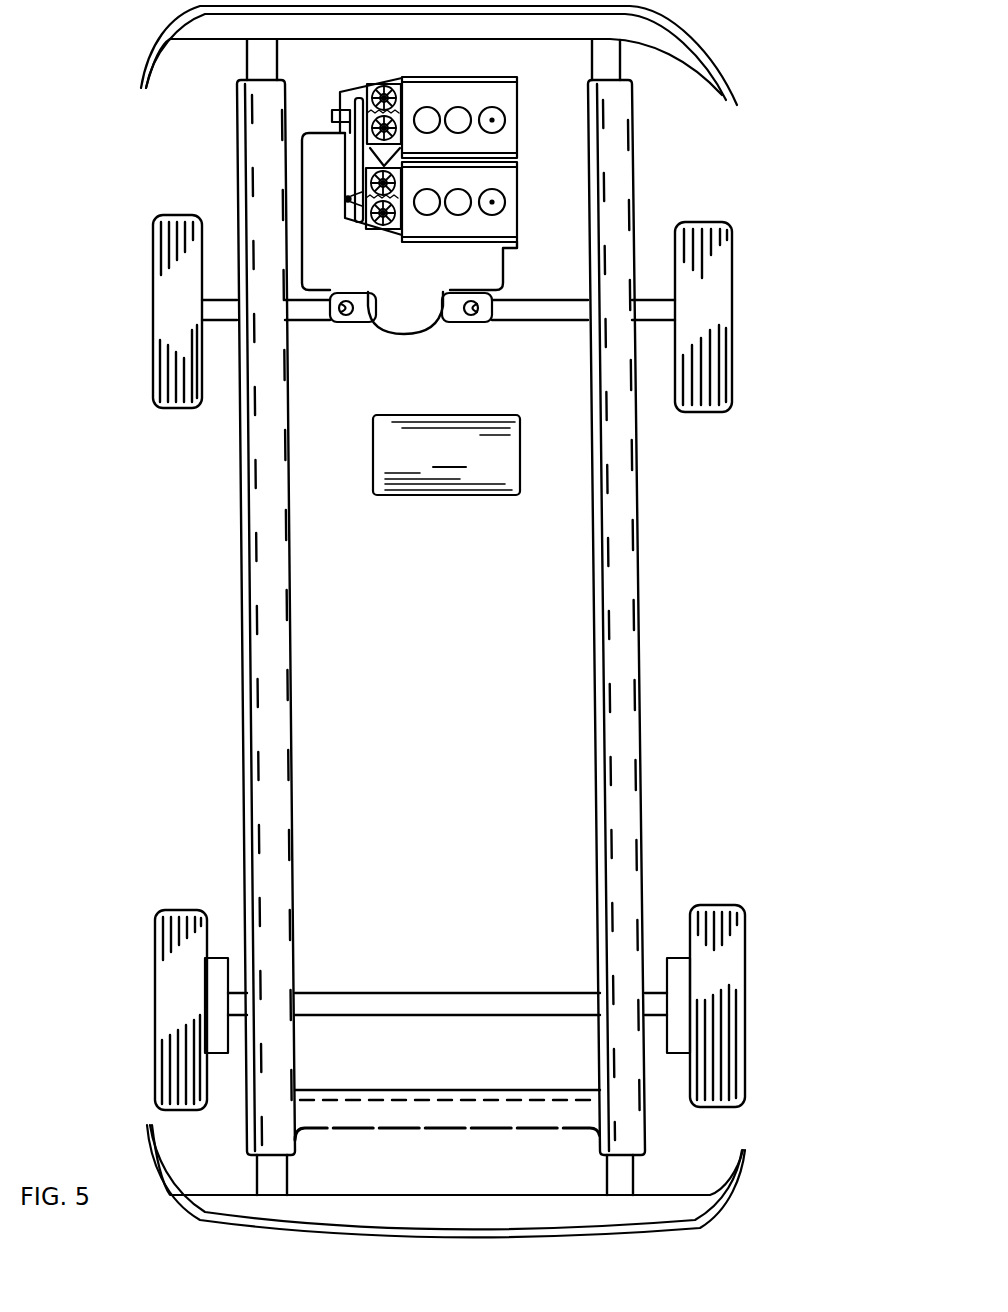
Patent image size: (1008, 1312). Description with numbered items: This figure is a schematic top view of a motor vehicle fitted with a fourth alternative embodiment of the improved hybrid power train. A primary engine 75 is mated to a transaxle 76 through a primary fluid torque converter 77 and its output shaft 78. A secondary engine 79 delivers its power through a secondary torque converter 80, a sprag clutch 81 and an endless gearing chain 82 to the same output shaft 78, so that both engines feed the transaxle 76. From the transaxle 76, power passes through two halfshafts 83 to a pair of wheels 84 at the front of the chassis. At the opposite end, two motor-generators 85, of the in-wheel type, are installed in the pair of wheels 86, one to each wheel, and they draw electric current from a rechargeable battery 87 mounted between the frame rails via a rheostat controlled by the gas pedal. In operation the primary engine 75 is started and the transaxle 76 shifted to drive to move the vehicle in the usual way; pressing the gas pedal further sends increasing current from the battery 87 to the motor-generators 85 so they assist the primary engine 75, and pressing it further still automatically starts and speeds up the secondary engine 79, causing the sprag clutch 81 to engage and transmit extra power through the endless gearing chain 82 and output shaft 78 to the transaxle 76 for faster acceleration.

The primary engine 75 is at (518, 212).
The transaxle 76 is at (418, 305).
The primary fluid torque converter 77 is at (379, 232).
The output shaft 78 is at (344, 199).
The secondary engine 79 is at (518, 101).
The secondary torque converter 80 is at (378, 82).
The sprag clutch 81 is at (342, 102).
The endless gearing chain 82 is at (356, 152).
The halfshafts 83 is at (316, 321).
The wheels 84 is at (152, 308).
The motor-generators 85 is at (217, 966).
The wheels 86 is at (158, 1000).
The rechargeable battery 87 is at (446, 455).